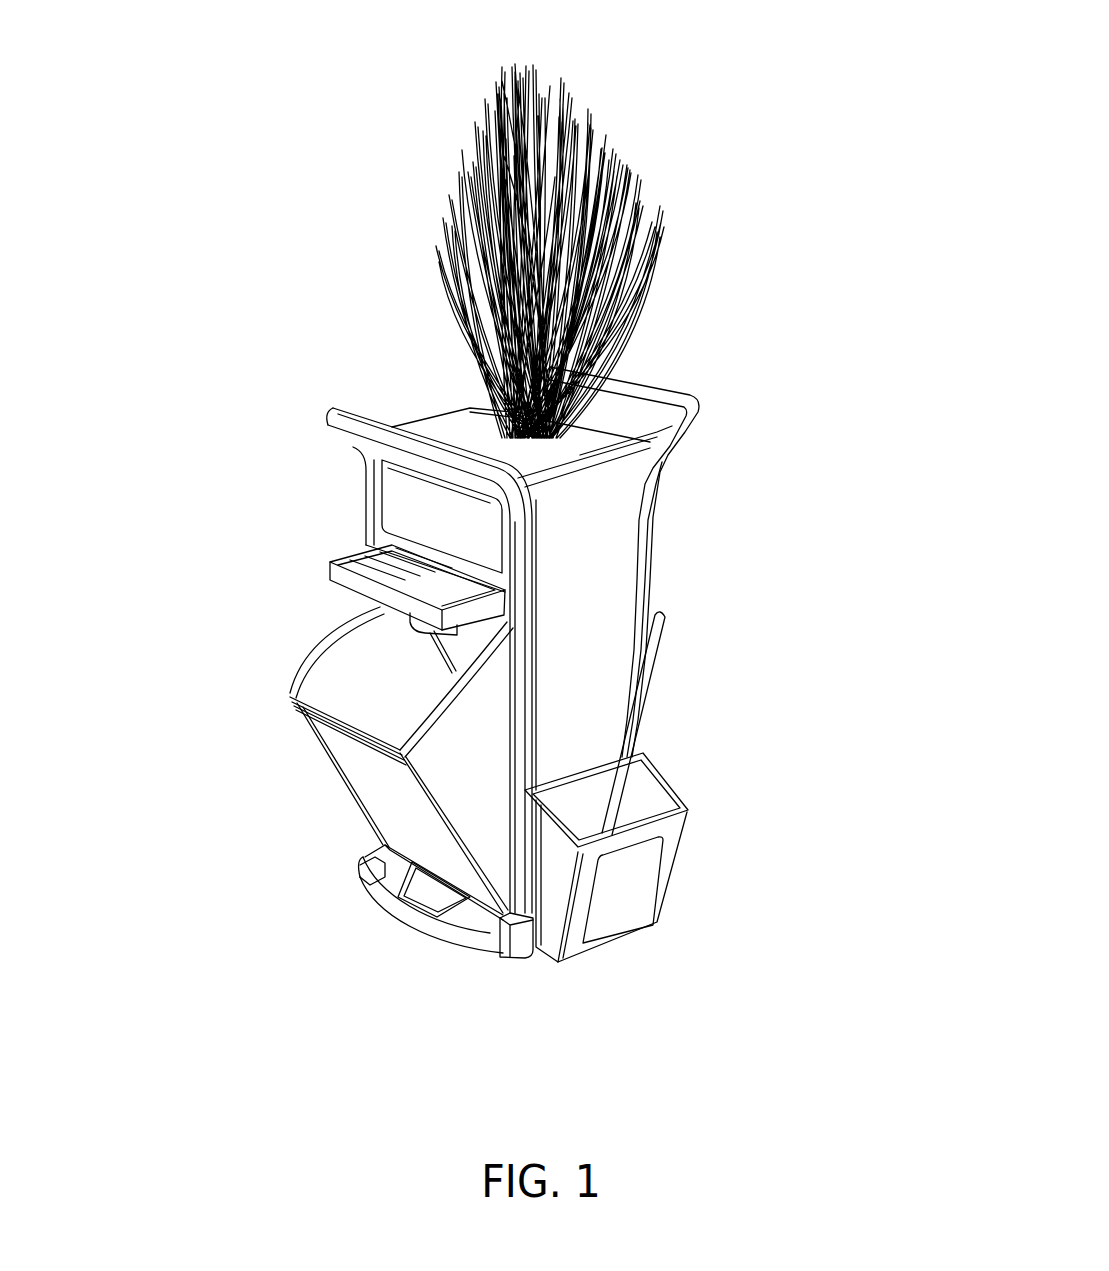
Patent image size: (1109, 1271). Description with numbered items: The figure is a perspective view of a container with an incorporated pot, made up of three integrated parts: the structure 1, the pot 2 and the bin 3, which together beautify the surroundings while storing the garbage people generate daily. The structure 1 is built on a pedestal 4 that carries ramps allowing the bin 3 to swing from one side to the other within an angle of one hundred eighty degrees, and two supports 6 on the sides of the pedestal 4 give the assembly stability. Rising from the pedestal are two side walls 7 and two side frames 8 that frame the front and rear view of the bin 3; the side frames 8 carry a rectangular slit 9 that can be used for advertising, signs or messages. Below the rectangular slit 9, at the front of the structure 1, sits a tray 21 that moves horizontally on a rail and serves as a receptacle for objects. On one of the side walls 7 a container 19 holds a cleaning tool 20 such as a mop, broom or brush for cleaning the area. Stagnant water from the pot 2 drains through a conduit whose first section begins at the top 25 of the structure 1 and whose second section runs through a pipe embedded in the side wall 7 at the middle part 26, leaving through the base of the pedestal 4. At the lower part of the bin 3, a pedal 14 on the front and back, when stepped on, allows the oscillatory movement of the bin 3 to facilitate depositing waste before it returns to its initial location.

The structure 1 is at (370, 488).
The pot 2 is at (588, 208).
The bin 3 is at (357, 690).
The pedestal 4 is at (450, 937).
The supports 6 is at (373, 853).
The side walls 7 is at (585, 507).
The side frames 8 is at (343, 410).
The rectangular slit 9 is at (438, 513).
The pedal 14 is at (420, 887).
The container 19 is at (630, 870).
The cleaning tool 20 is at (653, 660).
The tray 21 is at (329, 565).
The top 25 is at (700, 417).
The middle part 26 is at (568, 607).